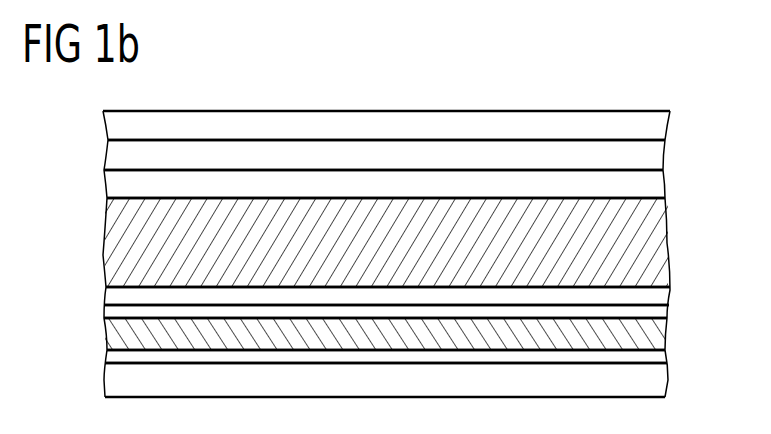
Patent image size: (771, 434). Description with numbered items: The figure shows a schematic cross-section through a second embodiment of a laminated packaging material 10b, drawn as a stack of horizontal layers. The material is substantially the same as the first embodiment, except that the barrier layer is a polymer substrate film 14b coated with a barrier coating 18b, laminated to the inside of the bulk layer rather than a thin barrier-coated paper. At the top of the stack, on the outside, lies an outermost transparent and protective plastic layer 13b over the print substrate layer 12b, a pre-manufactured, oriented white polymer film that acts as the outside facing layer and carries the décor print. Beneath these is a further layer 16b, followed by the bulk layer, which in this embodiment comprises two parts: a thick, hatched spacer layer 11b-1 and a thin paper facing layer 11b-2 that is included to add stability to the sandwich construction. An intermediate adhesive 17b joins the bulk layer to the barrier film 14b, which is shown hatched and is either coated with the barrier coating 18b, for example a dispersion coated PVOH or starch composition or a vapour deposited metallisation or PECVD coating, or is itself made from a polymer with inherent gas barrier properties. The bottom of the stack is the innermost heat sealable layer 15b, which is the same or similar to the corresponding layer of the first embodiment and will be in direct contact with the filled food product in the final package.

The laminated packaging material 10b is at (346, 254).
The outermost transparent and protective layer 13b is at (660, 128).
The print substrate layer 12b is at (660, 155).
The layer 16b is at (660, 184).
The spacer layer 11b-1 is at (660, 243).
The thin paper facing layer 11b-2 is at (658, 296).
The intermediate adhesive 17b is at (658, 310).
The polymer substrate film 14b is at (660, 333).
The barrier coating 18b is at (660, 357).
The innermost heat sealable layer 15b is at (660, 390).